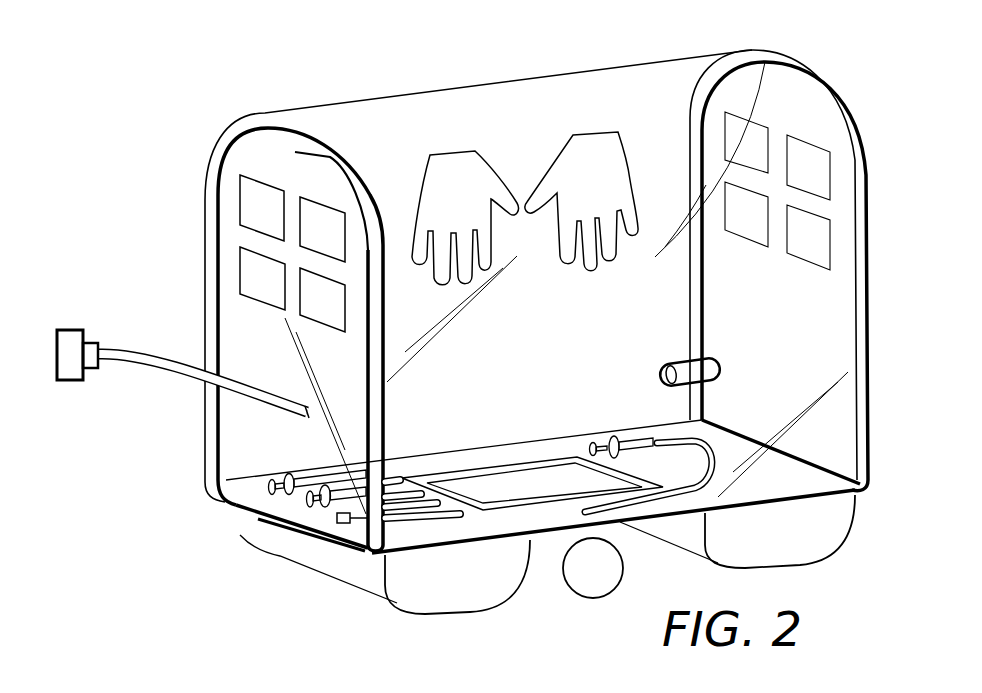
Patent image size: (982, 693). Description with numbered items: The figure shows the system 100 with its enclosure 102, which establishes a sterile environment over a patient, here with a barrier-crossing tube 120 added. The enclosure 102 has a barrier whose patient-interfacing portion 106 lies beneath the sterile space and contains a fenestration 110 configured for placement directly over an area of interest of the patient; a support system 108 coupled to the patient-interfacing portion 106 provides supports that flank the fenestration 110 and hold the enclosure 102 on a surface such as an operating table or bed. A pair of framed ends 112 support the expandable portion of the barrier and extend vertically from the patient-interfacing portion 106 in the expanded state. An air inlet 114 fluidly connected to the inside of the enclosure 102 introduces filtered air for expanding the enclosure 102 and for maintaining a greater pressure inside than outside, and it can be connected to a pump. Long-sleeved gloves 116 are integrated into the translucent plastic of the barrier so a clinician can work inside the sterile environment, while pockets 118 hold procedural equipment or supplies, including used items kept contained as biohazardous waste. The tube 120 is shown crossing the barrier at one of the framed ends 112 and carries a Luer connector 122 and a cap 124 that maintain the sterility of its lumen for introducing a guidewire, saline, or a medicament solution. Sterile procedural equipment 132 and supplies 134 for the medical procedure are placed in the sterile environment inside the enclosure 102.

The system 100 is at (160, 82).
The enclosure 102 is at (822, 62).
The patient-interfacing portion of the barrier 106 is at (265, 511).
The support system 108 is at (303, 560).
The fenestration 110 is at (550, 494).
The pair of framed ends 112 is at (287, 157).
The air inlet 114 is at (712, 370).
The long-sleeved gloves 116 is at (575, 152).
The pockets 118 is at (820, 232).
The barrier-crossing tube 120 is at (138, 360).
The Luer connector 122 is at (88, 340).
The cap 124 is at (72, 330).
The sterile procedural equipment 132 is at (357, 545).
The supplies 134 is at (357, 545).